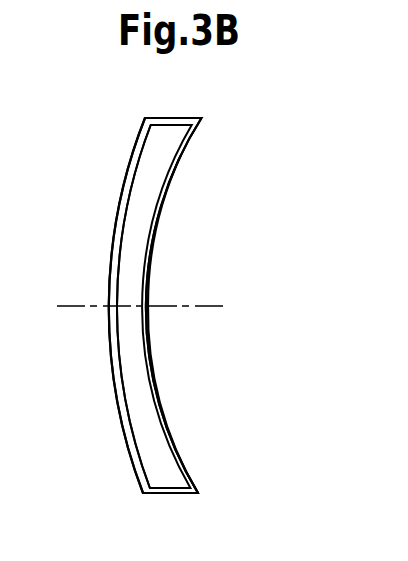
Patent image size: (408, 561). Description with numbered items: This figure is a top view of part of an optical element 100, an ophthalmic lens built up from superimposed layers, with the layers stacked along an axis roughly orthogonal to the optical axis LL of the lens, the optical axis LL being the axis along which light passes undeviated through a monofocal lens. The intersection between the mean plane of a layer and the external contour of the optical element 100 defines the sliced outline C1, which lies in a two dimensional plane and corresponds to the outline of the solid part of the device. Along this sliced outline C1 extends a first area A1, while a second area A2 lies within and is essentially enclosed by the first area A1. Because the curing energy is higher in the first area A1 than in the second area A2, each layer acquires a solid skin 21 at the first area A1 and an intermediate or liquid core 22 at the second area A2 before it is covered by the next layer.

The optical element 100 is at (203, 163).
The core 22 is at (140, 197).
The skin 21 is at (112, 263).
The optical axis LL is at (211, 305).
The sliced outline C1 is at (158, 398).
The first area A1 is at (174, 437).
The second area A2 is at (170, 468).